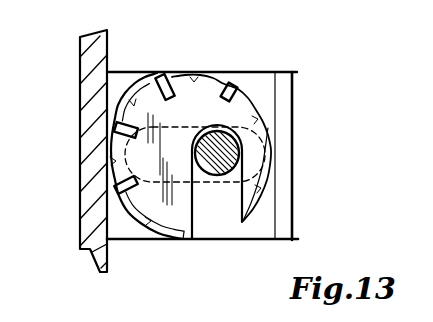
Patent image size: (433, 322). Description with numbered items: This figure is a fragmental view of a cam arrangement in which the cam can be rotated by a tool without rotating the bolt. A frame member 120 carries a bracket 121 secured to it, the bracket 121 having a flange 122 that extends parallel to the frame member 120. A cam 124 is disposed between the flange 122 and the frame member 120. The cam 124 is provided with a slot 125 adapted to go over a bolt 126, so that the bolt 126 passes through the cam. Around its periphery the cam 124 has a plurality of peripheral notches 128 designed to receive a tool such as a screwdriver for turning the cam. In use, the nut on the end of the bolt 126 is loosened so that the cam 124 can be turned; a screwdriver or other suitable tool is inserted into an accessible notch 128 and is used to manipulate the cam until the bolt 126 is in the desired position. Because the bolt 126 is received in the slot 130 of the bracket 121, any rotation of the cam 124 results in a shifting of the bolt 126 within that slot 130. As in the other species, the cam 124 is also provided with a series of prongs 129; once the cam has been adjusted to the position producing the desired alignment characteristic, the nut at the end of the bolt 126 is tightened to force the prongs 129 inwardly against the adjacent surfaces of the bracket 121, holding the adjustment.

The frame member 120 is at (82, 181).
The bracket 121 is at (262, 240).
The flange 122 is at (297, 222).
The cam 124 is at (158, 223).
The slot 125 is at (223, 225).
The bolt 126 is at (187, 125).
The peripheral notches 128 is at (161, 77).
The prongs 129 is at (253, 110).
The slot 130 is at (283, 94).